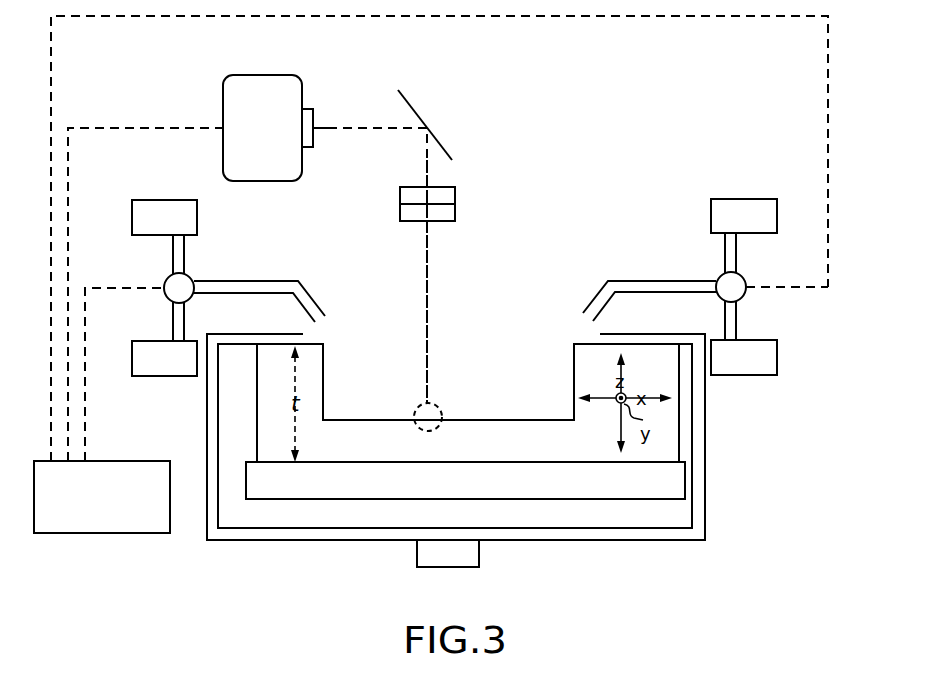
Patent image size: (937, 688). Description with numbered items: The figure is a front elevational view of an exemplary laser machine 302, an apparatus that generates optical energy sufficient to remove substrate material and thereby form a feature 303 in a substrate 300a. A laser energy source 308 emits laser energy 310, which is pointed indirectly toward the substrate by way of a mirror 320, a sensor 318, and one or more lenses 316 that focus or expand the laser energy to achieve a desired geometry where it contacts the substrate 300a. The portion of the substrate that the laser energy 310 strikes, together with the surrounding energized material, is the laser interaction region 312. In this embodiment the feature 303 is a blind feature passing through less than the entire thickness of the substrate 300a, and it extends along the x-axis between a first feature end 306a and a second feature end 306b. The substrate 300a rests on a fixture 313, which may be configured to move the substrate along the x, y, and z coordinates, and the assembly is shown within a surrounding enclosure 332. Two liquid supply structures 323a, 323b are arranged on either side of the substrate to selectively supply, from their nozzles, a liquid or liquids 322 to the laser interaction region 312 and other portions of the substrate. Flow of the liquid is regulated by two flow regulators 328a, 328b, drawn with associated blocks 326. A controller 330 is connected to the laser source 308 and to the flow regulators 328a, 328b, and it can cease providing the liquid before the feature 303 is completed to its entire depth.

The laser machine 302 is at (632, 85).
The laser energy source 308 is at (281, 141).
The mirror 320 is at (418, 111).
The sensor 318 is at (456, 195).
The lens 316 is at (456, 212).
The laser energy 310 is at (440, 287).
The laser interaction region 312 is at (415, 406).
The liquid 322 is at (183, 233).
The actuator 326 is at (183, 374).
The flow regulator 328a is at (166, 279).
The flow regulator 328b is at (746, 281).
The liquid supply structure 323a is at (204, 276).
The liquid supply structure 323b is at (698, 279).
The process chamber 332 is at (464, 566).
The substrate 300a is at (558, 447).
The feature 303 is at (507, 396).
The first feature end 306a is at (326, 376).
The second feature end 306b is at (574, 370).
The fixture 313 is at (484, 492).
The controller 330 is at (163, 496).